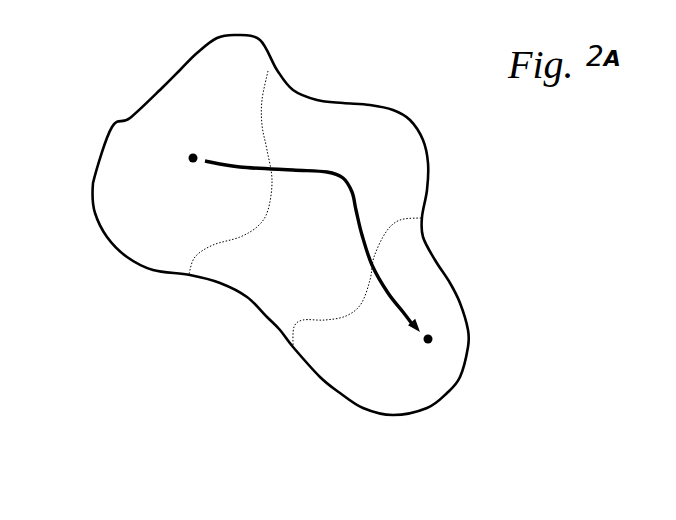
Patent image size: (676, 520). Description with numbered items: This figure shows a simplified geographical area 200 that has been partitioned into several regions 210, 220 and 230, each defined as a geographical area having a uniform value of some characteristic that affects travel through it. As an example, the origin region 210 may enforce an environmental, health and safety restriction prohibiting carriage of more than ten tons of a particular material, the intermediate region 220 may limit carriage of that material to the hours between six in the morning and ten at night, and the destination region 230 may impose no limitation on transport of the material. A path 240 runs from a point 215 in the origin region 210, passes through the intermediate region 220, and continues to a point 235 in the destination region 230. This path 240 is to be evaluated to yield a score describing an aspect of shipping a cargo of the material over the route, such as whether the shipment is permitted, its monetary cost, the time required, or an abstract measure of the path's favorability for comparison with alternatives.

The area 200 is at (218, 327).
The origin region 210 is at (120, 190).
The point 215 is at (189, 156).
The intermediate region 220 is at (357, 121).
The destination region 230 is at (430, 293).
The point 235 is at (425, 345).
The path 240 is at (354, 204).